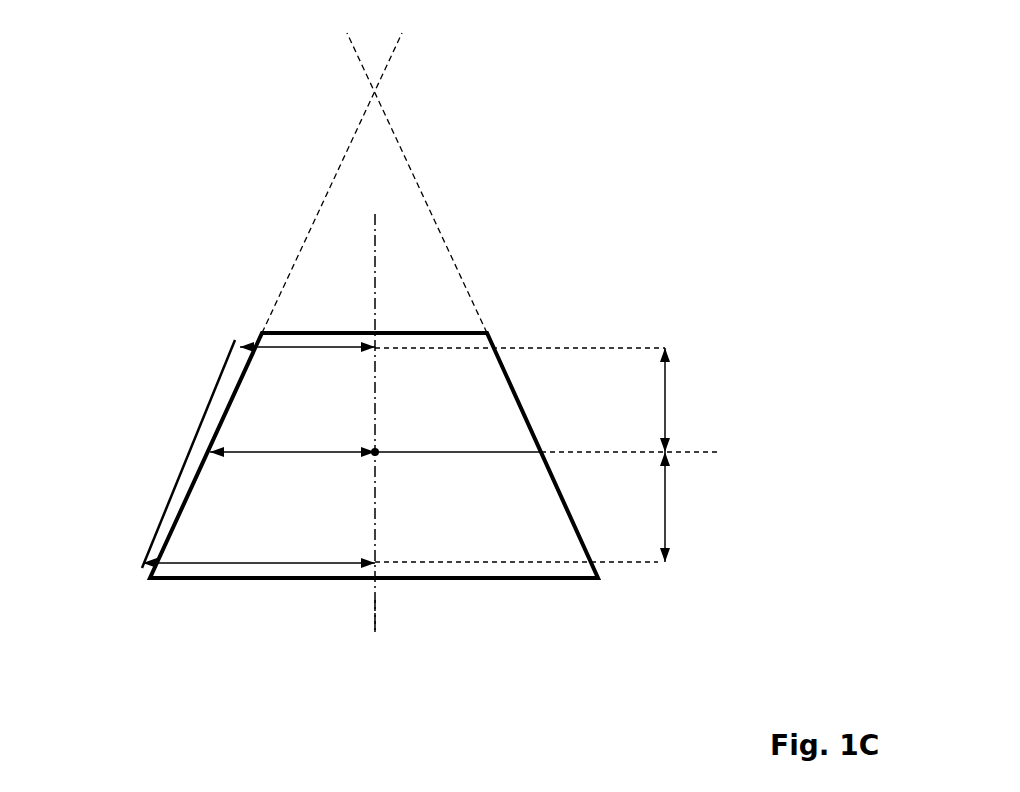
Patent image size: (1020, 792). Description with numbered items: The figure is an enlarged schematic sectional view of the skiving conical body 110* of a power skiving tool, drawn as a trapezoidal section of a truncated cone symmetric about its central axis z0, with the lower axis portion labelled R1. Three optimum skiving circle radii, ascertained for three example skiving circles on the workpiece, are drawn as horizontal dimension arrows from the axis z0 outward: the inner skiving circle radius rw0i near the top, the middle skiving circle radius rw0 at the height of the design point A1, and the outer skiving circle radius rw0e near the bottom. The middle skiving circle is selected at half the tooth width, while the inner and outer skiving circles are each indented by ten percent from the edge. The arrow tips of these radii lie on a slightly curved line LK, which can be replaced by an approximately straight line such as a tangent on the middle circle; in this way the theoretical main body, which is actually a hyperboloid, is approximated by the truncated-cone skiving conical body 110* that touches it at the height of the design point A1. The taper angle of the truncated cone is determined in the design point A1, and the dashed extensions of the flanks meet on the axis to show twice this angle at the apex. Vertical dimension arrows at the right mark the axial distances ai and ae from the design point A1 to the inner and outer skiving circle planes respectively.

The skiving conical body 110 is at (208, 258).
The axis of the skiving conical body z0 is at (374, 401).
The reference axis R1 is at (375, 631).
The slightly curved line LK is at (157, 542).
The design point A1 is at (375, 452).
The inner skiving circle radius rw0i is at (452, 359).
The middle skiving circle radius rw0 is at (465, 442).
The outer skiving circle radius rw0e is at (400, 553).
The axial distance a_i ai is at (677, 400).
The axial distance a_e ae is at (679, 507).